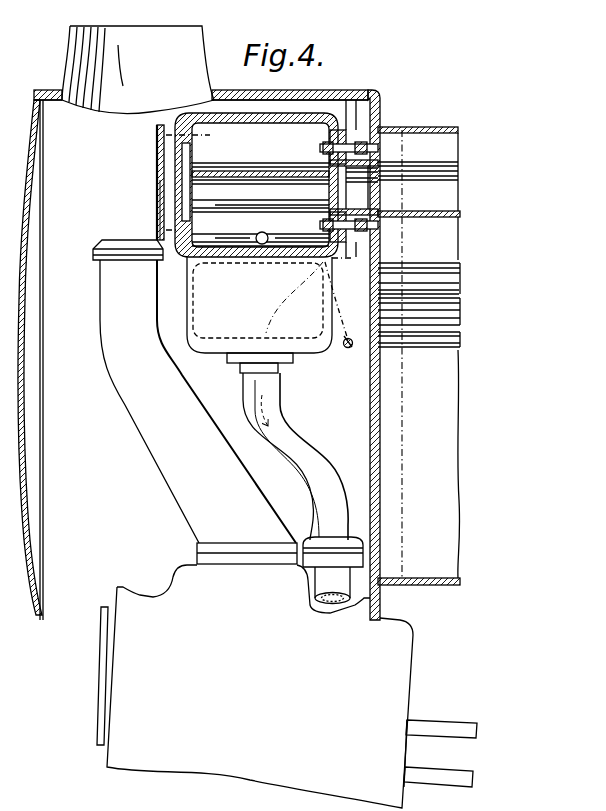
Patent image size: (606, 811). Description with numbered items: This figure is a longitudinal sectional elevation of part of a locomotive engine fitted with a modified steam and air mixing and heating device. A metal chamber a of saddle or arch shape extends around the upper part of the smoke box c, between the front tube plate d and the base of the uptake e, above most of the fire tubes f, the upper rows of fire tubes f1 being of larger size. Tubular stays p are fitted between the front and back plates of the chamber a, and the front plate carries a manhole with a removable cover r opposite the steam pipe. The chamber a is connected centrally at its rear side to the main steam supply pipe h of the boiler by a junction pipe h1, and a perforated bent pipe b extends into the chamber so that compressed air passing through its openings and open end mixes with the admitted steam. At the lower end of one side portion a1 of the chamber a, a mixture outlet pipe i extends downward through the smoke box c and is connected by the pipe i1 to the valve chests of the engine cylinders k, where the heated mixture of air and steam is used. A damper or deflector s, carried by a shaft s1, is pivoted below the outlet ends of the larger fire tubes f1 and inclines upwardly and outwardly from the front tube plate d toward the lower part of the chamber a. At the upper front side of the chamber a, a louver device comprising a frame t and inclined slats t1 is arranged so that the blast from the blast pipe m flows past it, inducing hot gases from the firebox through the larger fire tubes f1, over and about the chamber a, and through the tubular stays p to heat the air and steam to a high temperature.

The uptake e is at (138, 70).
The chamber a is at (276, 178).
The frame t is at (156, 134).
The inclined slats t1 is at (158, 208).
The removable cover r is at (184, 170).
The stays p is at (231, 168).
The smoke box c is at (193, 355).
The perforated bent pipe b is at (260, 232).
The side portion a1 is at (260, 245).
The damper or deflector s is at (328, 283).
The shaft s1 is at (341, 353).
The junction pipe h1 is at (363, 187).
The main steam supply pipe h is at (466, 193).
The upper row of fire tubes f1 is at (421, 268).
The fire tubes f is at (420, 350).
The front tube plate d is at (378, 423).
The blast pipe m is at (195, 402).
The mixture outlet pipe i is at (298, 447).
The pipe i1 is at (330, 583).
The engine cylinders k is at (287, 686).